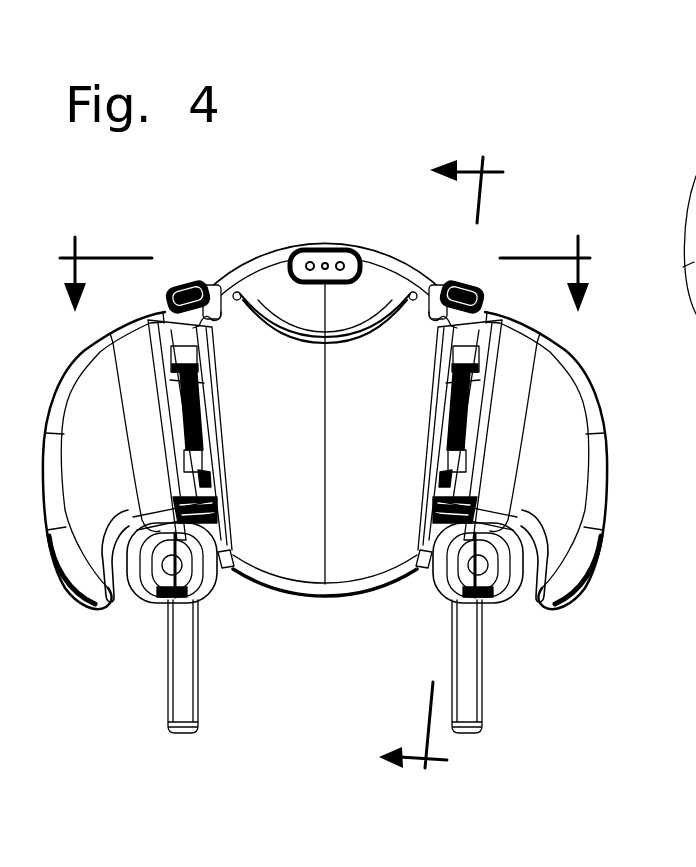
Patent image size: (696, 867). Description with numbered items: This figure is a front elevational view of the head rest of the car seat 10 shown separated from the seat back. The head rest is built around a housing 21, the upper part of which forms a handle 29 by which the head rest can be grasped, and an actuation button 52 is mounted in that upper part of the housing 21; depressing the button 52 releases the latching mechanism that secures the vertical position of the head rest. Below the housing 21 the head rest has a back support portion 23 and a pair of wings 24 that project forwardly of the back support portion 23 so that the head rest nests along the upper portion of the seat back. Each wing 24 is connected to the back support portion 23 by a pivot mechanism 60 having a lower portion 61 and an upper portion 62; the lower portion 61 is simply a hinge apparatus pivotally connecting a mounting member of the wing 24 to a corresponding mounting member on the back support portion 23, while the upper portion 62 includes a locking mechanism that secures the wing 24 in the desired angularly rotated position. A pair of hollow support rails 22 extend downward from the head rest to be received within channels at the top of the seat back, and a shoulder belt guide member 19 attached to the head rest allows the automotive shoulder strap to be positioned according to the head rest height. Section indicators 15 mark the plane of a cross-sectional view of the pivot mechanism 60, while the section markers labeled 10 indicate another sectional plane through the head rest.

The car seat 10 is at (321, 255).
The section line 15 is at (464, 460).
The shoulder belt guide member 19 is at (212, 590).
The housing 21 is at (368, 256).
The support rails 22 is at (183, 694).
The back support portion 23 is at (340, 578).
The wings 24 is at (84, 583).
The handle 29 is at (290, 250).
The actuation button 52 is at (338, 250).
The pivot mechanism 60 is at (188, 283).
The lower portion 61 is at (205, 480).
The upper portion 62 is at (188, 352).